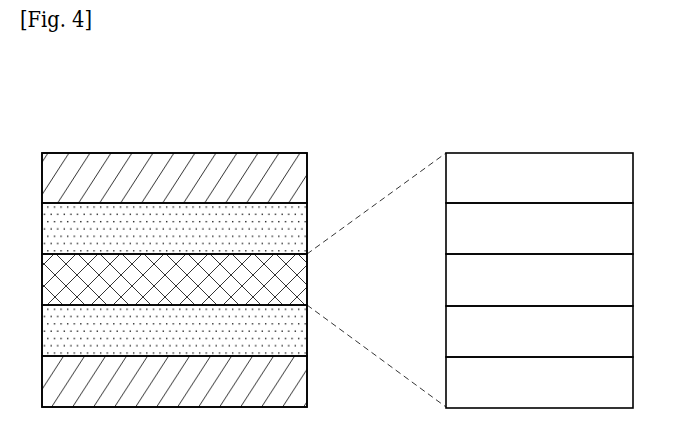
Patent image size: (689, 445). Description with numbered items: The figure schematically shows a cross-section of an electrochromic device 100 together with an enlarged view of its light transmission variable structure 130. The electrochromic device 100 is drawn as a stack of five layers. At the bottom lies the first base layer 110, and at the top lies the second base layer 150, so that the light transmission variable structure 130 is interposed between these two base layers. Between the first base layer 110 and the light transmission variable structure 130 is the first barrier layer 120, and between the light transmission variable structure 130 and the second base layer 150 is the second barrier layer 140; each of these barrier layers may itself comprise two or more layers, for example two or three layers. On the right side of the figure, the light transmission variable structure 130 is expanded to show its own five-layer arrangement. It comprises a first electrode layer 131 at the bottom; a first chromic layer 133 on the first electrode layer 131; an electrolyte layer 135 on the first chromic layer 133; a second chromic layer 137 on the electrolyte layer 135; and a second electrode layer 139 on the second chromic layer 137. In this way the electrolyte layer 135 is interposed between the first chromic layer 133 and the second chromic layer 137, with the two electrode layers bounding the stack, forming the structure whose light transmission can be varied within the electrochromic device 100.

The electrochromic device 100 is at (360, 107).
The first base layer 110 is at (174, 381).
The first barrier layer 120 is at (174, 330).
The light transmission variable structure 130 is at (244, 280).
The second barrier layer 140 is at (174, 228).
The second base layer 150 is at (174, 178).
The first electrode layer 131 is at (539, 382).
The first chromic layer 133 is at (539, 331).
The electrolyte layer 135 is at (539, 280).
The second chromic layer 137 is at (539, 228).
The second electrode layer 139 is at (539, 178).